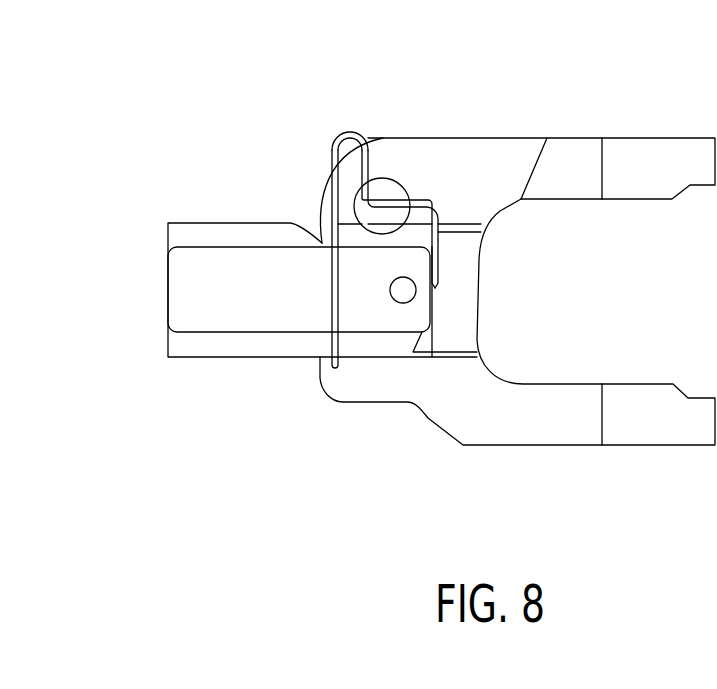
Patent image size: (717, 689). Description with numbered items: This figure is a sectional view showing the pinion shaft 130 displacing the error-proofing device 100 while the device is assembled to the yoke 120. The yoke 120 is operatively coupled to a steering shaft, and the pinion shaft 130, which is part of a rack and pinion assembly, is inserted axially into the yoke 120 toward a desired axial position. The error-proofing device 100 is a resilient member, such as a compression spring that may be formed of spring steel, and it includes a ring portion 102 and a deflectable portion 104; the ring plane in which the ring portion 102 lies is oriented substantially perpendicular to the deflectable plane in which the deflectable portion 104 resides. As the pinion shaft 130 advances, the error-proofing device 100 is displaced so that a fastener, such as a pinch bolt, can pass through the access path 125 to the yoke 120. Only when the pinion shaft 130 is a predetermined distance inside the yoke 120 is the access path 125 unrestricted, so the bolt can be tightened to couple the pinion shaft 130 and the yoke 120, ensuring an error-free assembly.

The error-proofing device 100 is at (435, 256).
The ring portion 102 is at (338, 312).
The deflectable portion 104 is at (440, 240).
The yoke 120 is at (493, 160).
The access path 125 is at (389, 187).
The pinion shaft 130 is at (203, 318).